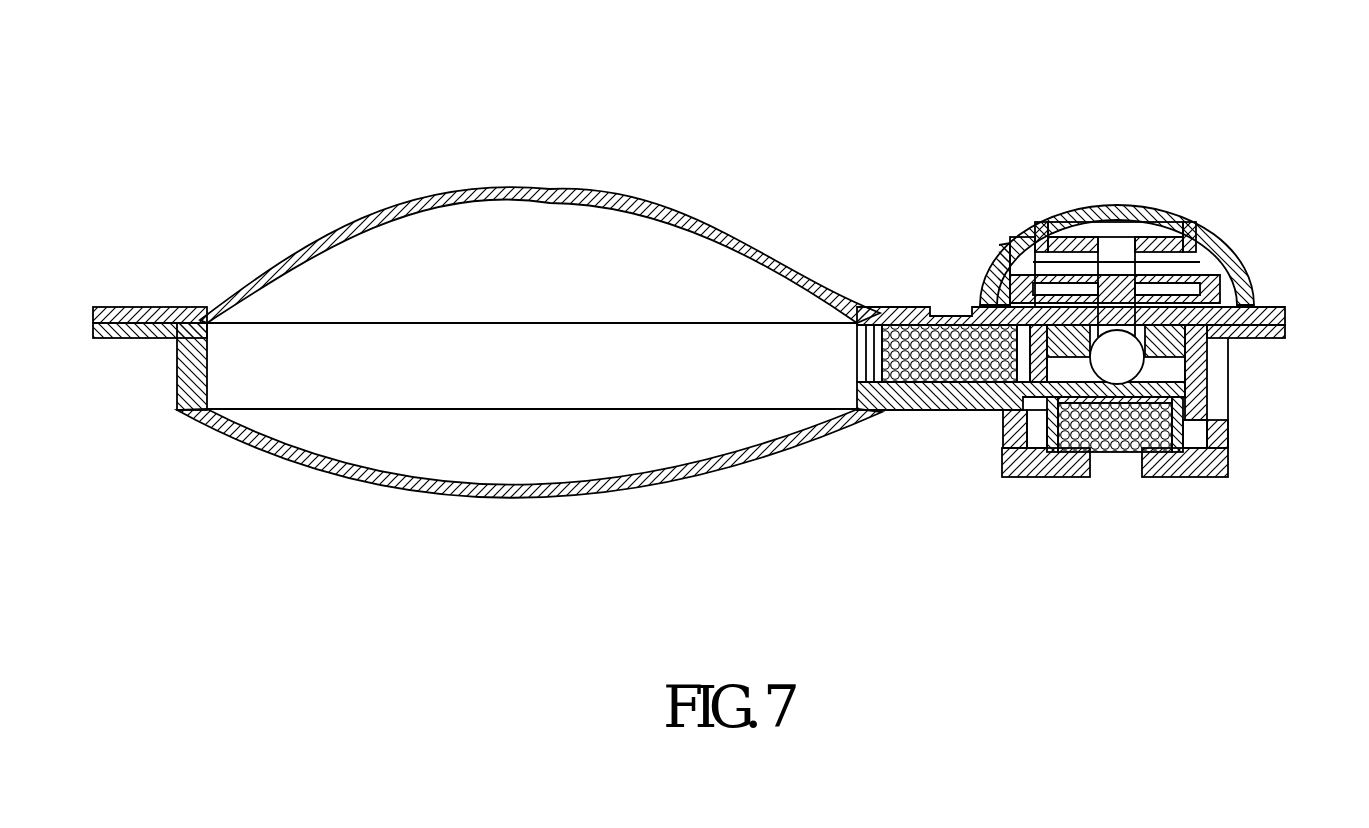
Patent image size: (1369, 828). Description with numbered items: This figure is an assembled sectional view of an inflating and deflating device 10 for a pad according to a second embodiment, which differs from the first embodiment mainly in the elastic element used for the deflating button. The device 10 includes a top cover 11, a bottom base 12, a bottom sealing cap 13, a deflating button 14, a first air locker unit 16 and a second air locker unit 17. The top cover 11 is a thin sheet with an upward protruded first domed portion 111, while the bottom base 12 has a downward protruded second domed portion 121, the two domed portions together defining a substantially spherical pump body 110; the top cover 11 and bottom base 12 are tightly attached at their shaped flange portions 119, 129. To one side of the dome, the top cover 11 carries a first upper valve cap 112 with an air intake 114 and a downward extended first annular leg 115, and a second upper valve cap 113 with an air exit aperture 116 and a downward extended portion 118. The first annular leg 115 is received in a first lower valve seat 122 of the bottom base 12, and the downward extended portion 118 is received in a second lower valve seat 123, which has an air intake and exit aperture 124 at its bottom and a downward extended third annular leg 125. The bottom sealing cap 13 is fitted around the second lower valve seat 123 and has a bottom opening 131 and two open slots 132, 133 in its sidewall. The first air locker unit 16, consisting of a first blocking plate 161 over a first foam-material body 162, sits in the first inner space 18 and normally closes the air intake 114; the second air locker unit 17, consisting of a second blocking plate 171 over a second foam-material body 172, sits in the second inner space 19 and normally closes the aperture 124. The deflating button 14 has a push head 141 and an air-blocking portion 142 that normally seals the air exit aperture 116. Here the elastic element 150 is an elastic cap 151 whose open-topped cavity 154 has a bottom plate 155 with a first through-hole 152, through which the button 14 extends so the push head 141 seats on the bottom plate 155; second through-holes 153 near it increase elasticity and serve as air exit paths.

The inflating and deflating device 10 is at (359, 151).
The top cover 11 is at (593, 176).
The bottom base 12 is at (573, 515).
The bottom sealing cap 13 is at (1238, 475).
The deflating button 14 is at (1163, 177).
The first air locker unit 16 is at (875, 326).
The second air locker unit 17 is at (1130, 450).
The first inner space 18 is at (875, 355).
The second inner space 19 is at (1190, 440).
The pump body 110 is at (265, 244).
The first domed portion 111 is at (335, 232).
The first upper valve cap 112 is at (914, 294).
The second upper valve cap 113 is at (1275, 305).
The air intake 114 is at (950, 308).
The first annular leg 115 is at (858, 408).
The air exit aperture 116 is at (1215, 338).
The downward extended portion 118 is at (1195, 365).
The shaped flange portion 119 is at (160, 307).
The second domed portion 121 is at (345, 465).
The first lower valve seat 122 is at (902, 432).
The second lower valve seat 123 is at (1003, 429).
The air intake and exit aperture 124 is at (1215, 392).
The third annular leg 125 is at (1035, 477).
The shaped flange portion 129 is at (162, 340).
The opening 131 is at (1118, 478).
The open slot 132 is at (1002, 455).
The open slot 133 is at (1230, 452).
The push head 141 is at (1112, 220).
The air-blocking portion 142 is at (992, 320).
The elastic element 150 is at (1241, 228).
The elastic cap 151 is at (1200, 225).
The first through-hole 152 is at (1148, 240).
The second through-holes 153 is at (1020, 240).
The open-topped cavity 154 is at (1045, 235).
The bottom plate 155 is at (1112, 250).
The first blocking plate 161 is at (870, 330).
The first foam-material body 162 is at (882, 380).
The second blocking plate 171 is at (1182, 410).
The second foam-material body 172 is at (1182, 435).